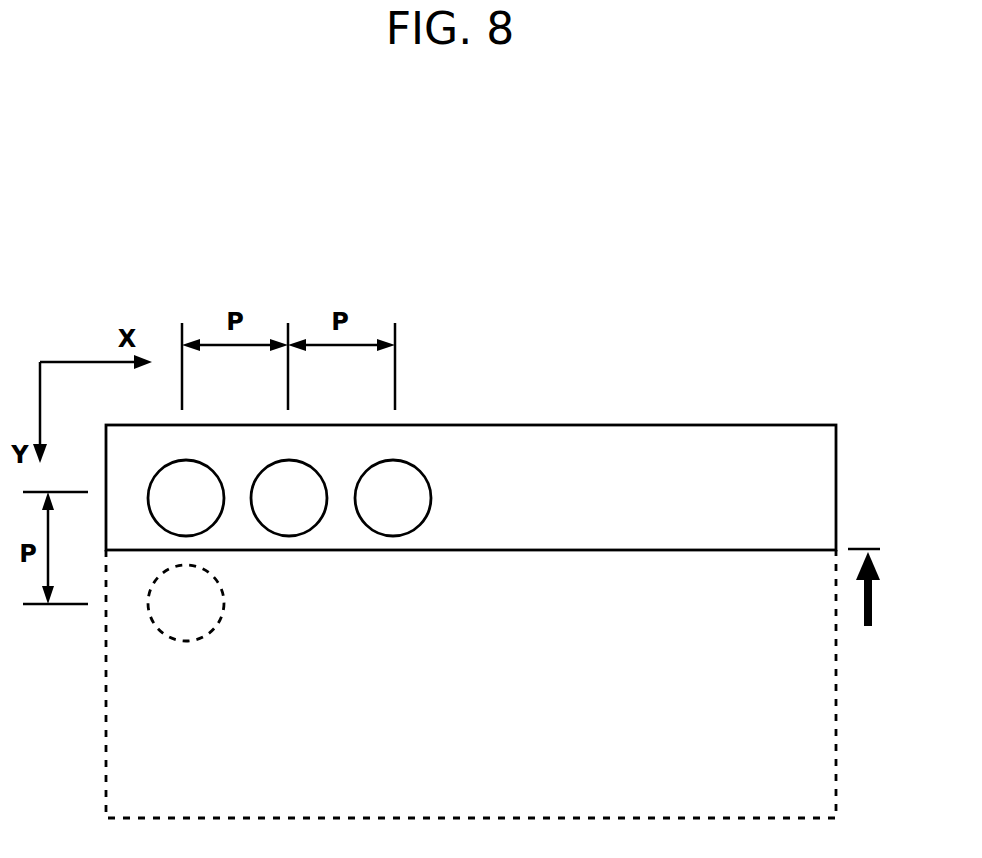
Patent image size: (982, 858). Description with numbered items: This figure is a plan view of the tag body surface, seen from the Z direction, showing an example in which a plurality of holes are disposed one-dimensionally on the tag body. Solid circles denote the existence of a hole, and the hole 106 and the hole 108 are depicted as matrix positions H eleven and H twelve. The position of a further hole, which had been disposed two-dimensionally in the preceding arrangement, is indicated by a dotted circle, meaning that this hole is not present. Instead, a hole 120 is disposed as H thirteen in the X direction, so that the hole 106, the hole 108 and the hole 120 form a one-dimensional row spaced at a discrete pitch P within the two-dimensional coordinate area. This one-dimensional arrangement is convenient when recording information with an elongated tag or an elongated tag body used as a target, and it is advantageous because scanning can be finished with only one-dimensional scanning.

The hole 106 is at (212, 529).
The hole 108 is at (310, 530).
The hole 120 is at (412, 530).